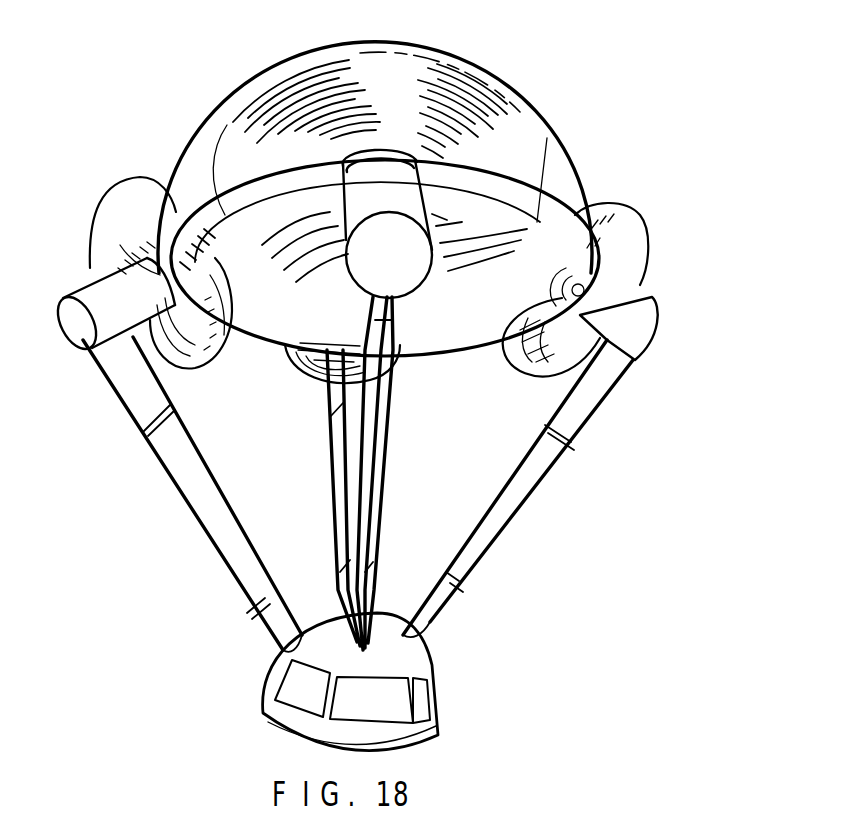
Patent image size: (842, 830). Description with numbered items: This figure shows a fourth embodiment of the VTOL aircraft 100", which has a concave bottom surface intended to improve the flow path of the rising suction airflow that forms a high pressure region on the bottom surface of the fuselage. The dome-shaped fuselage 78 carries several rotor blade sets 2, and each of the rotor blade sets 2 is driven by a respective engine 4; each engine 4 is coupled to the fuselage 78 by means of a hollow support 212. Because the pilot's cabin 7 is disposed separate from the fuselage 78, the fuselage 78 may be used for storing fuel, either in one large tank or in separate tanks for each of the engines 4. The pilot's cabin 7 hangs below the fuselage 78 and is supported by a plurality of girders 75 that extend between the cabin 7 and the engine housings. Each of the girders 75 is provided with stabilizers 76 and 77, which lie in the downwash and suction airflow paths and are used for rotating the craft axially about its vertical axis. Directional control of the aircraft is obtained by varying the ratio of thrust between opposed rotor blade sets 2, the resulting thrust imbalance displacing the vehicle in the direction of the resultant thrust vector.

The VTOL aircraft 100 is at (560, 134).
The fuselage 78 is at (560, 193).
The rotor blade sets 2 is at (227, 157).
The engine 4 is at (93, 308).
The hollow support 212 is at (538, 362).
The girders 75 is at (197, 518).
The stabilizer 76 is at (377, 325).
The stabilizer 77 is at (338, 582).
The pilot's cabin 7 is at (410, 658).